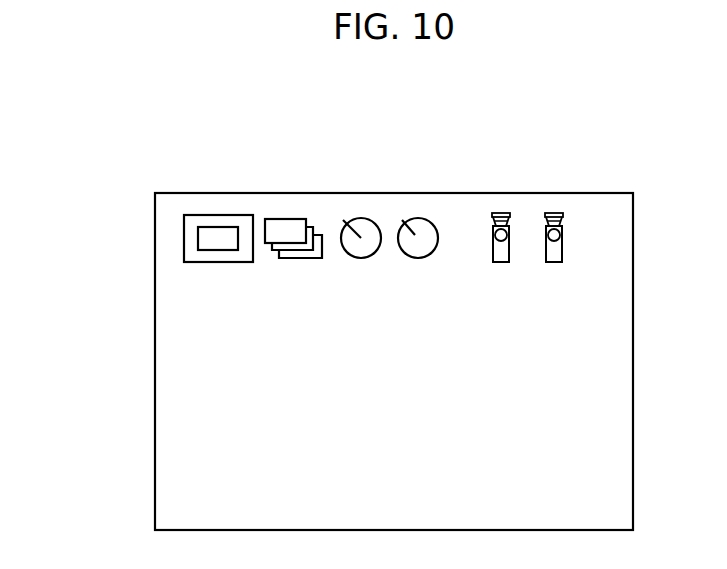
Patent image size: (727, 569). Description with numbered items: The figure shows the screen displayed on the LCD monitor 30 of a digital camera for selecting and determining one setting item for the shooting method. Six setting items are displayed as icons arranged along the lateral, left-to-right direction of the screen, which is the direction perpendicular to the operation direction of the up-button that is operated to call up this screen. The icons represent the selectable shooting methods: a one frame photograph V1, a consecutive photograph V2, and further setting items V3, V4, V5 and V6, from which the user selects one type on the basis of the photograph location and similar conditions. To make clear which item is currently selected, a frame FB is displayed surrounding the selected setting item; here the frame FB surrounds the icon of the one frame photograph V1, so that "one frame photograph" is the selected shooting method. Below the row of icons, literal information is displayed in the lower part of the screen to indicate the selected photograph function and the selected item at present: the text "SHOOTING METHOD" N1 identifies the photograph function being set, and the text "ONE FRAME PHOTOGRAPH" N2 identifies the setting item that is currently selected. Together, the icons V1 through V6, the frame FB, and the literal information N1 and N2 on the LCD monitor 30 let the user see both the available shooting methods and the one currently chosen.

The LCD monitor 30 is at (117, 157).
The frame FB is at (183, 238).
The one frame photograph V1 is at (222, 227).
The consecutive photograph V2 is at (293, 219).
The self-timer icon V3 is at (363, 218).
The self-timer 2s icon V4 is at (422, 218).
The remote control icon V5 is at (501, 213).
The remote control 3s icon V6 is at (554, 213).
The literal information "SHOOTING METHOD" N1 is at (538, 381).
The literal information "ONE FRAME PHOTOGRAPH" N2 is at (588, 340).